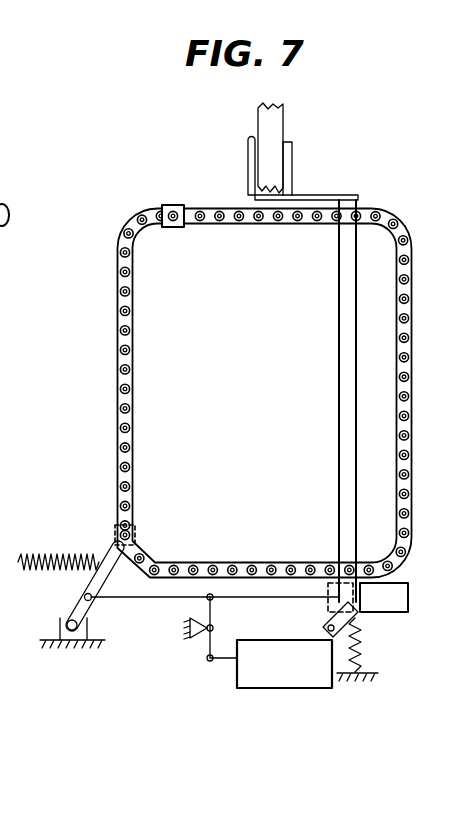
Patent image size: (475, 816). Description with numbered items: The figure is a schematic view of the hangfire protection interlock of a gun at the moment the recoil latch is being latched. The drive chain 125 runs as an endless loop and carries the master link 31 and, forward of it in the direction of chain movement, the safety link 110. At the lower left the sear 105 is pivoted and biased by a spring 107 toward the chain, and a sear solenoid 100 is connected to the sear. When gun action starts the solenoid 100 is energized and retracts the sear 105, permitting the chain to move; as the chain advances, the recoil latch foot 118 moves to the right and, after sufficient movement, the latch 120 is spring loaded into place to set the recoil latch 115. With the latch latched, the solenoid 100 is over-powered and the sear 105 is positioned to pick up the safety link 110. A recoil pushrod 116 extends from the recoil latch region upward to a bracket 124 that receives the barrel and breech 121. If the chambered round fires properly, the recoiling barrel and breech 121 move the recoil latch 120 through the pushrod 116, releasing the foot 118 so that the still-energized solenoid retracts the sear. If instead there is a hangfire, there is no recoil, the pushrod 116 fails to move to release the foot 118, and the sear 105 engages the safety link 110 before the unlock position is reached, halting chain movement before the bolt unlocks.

The master link 31 is at (175, 212).
The barrel and breech 121 is at (270, 124).
The master link position after firing 124 is at (328, 192).
The recoil pushrod 116 is at (338, 413).
The safety link position after firing 125 is at (103, 453).
The spring 107 is at (62, 556).
The safety link 110 is at (137, 533).
The sear 105 is at (100, 579).
The recoil latch foot 118 is at (390, 590).
The recoil latch 115 is at (417, 602).
The latch 120 is at (362, 618).
The sear solenoid 100 is at (314, 683).